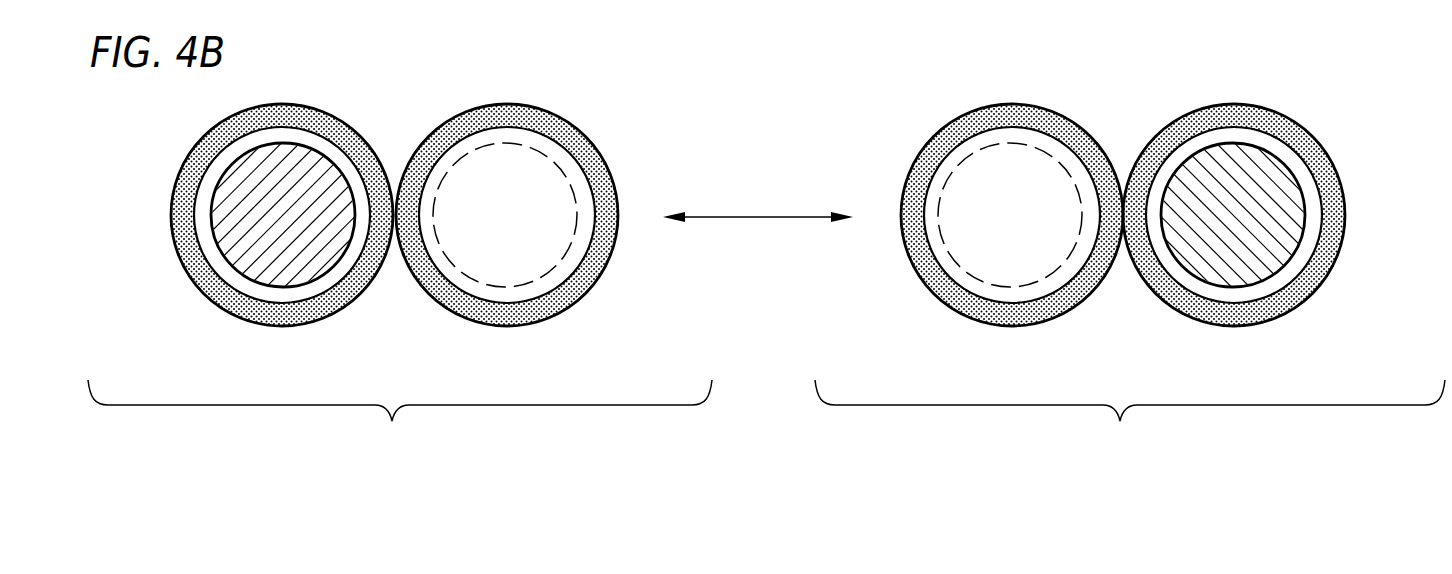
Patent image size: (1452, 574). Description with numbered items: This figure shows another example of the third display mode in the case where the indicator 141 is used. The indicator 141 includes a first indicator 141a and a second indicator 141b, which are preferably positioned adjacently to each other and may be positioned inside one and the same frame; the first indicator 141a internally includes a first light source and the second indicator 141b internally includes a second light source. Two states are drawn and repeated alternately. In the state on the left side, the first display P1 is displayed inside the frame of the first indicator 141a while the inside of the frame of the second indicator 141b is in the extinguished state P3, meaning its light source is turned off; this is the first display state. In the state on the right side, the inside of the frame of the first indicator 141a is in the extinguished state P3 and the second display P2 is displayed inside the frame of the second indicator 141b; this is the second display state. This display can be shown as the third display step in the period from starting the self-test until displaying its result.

The indicator 141 is at (766, 418).
The first indicator 141a is at (198, 308).
The second indicator 141b is at (592, 308).
The first display P1 is at (243, 163).
The second display P2 is at (1282, 183).
The extinguished state P3 is at (553, 183).